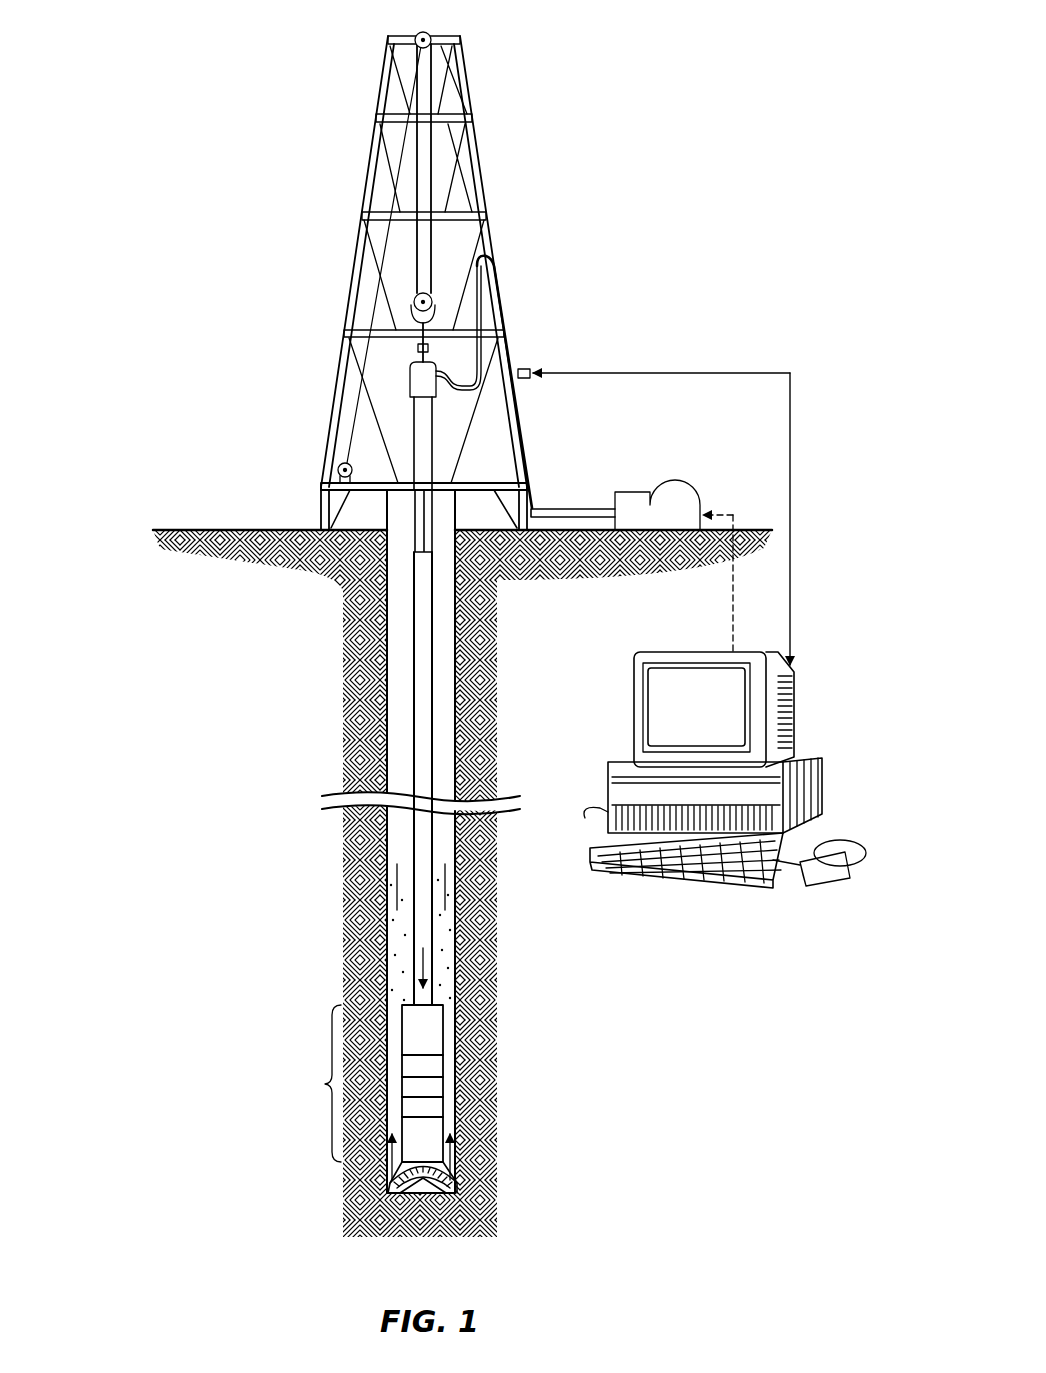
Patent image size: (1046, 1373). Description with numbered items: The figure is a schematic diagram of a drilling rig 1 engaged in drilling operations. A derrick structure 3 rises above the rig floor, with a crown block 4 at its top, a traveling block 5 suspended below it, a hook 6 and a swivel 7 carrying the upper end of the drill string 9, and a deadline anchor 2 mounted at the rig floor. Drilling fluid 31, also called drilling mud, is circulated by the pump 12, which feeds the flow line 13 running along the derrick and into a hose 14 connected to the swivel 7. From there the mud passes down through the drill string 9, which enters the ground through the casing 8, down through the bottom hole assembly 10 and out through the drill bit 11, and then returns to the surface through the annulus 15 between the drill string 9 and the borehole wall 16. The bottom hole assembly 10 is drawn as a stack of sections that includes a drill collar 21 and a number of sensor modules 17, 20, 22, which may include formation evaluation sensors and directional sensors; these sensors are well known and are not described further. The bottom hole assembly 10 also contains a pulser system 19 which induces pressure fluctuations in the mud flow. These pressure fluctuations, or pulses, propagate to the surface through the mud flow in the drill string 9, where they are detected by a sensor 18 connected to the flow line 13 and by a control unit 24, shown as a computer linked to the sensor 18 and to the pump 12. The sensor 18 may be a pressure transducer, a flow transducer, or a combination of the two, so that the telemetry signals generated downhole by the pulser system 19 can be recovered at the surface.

The drilling rig 1 is at (362, 187).
The deadline anchor pulley 2 is at (338, 470).
The derrick 3 is at (358, 316).
The crown block 4 is at (417, 34).
The traveling block 5 is at (413, 297).
The hook 6 is at (416, 338).
The swivel 7 is at (410, 380).
The casing 8 is at (405, 530).
The drill string 9 is at (413, 672).
The bottom hole assembly 10 is at (315, 1083).
The drill bit 11 is at (388, 1180).
The pump 12 is at (681, 493).
The flow line 13 is at (537, 482).
The hose 14 is at (476, 370).
The annulus 15 is at (445, 730).
The borehole wall 16 is at (457, 655).
The sensor module 17 is at (443, 1080).
The sensor 18 is at (534, 378).
The pulser system 19 is at (443, 1057).
The sensor module 20 is at (443, 1103).
The drill collar 21 is at (443, 1027).
The sensor module 22 is at (443, 1140).
The control unit 24 is at (807, 628).
The drilling fluid 31 is at (397, 945).